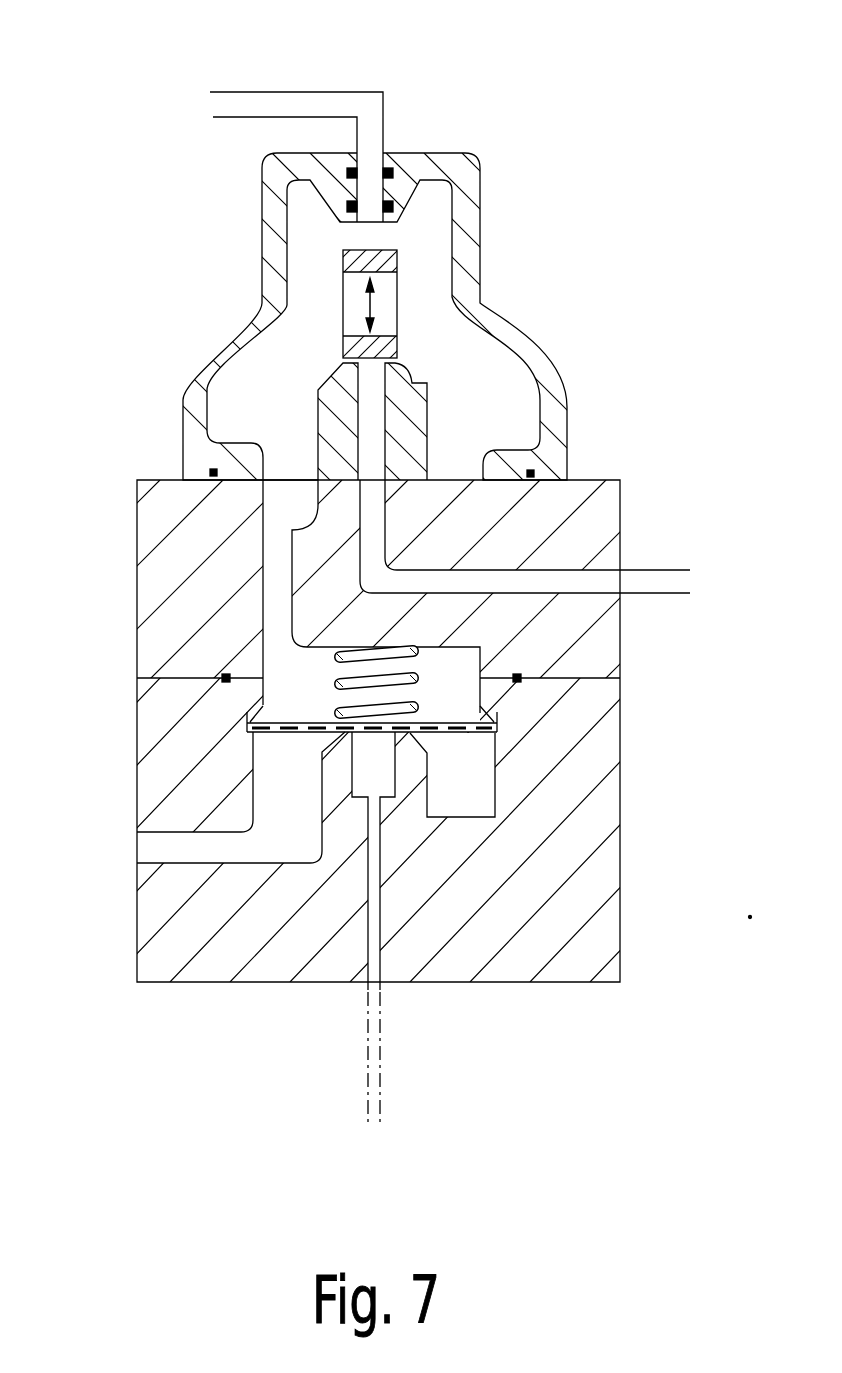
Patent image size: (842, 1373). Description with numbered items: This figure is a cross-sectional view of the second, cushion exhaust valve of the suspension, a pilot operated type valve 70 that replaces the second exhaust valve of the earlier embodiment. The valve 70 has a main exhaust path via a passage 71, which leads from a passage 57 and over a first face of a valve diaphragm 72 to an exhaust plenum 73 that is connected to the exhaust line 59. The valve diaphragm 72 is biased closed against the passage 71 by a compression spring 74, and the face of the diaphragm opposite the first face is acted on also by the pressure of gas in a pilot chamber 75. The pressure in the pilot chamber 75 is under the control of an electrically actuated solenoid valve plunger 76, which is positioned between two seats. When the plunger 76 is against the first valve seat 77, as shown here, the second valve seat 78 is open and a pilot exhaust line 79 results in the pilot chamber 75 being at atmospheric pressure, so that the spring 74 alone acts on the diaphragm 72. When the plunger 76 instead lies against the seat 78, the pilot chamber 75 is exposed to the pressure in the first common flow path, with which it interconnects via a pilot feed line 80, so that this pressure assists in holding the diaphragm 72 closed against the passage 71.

The passage 57 is at (366, 1047).
The exhaust line 59 is at (177, 848).
The pilot operated type valve 70 is at (492, 290).
The passage 71 is at (378, 943).
The valve diaphragm 72 is at (487, 738).
The exhaust plenum 73 is at (470, 797).
The compression spring 74 is at (413, 683).
The pilot chamber 75 is at (240, 386).
The solenoid valve plunger 76 is at (387, 263).
The first valve seat 77 is at (413, 381).
The second valve seat 78 is at (342, 236).
The pilot exhaust line 79 is at (248, 103).
The pilot feed line 80 is at (572, 584).